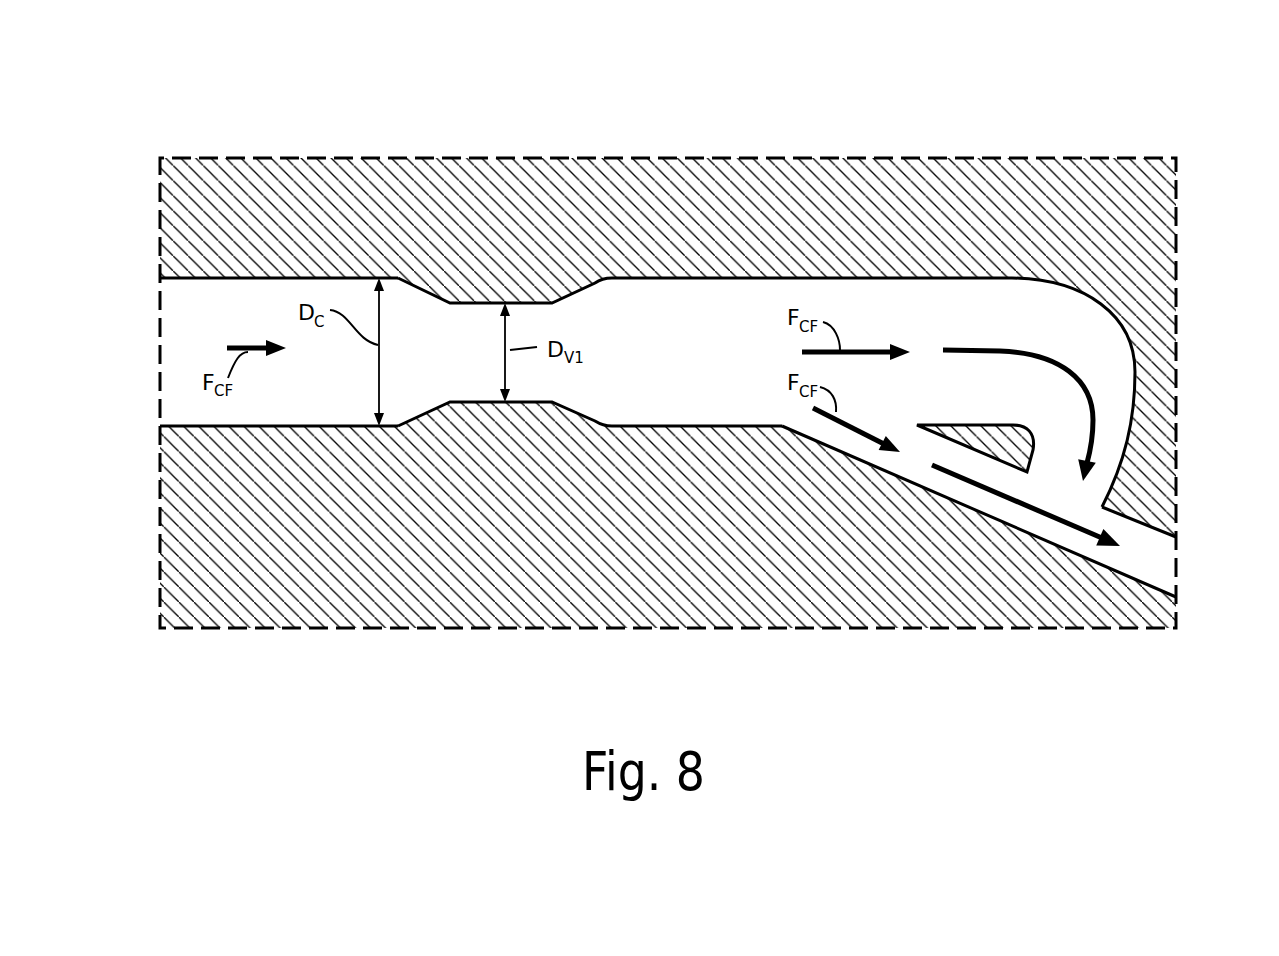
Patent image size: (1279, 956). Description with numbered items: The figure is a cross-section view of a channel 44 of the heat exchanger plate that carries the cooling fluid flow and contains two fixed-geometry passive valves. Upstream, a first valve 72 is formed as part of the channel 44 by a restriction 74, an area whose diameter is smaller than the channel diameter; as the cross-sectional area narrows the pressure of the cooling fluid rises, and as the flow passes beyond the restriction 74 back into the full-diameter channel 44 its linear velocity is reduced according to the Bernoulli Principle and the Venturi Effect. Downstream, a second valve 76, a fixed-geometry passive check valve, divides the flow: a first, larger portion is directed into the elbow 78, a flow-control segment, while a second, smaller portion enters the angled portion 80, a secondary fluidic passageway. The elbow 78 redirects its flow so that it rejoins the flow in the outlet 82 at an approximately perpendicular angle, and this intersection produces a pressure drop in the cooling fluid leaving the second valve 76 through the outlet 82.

The channel 44 is at (294, 266).
The first valve 72 is at (607, 450).
The restriction 74 is at (463, 305).
The second valve 76 is at (1143, 238).
The elbow 78 is at (1133, 353).
The angled portion 80 is at (982, 515).
The outlet 82 is at (1147, 523).